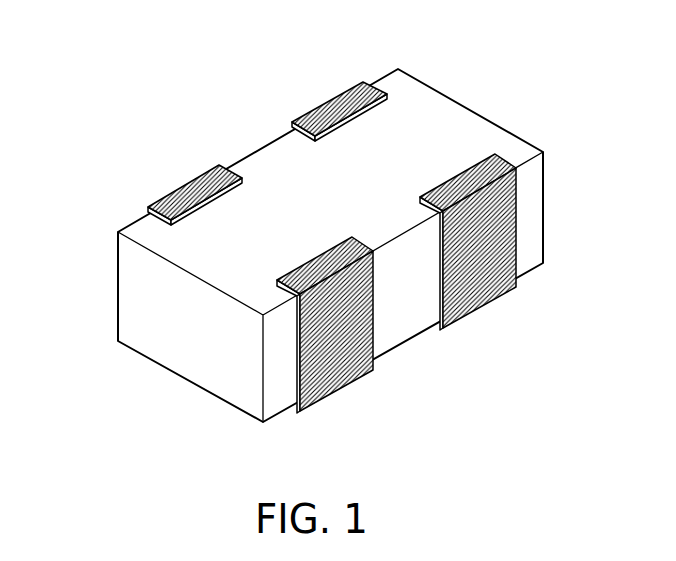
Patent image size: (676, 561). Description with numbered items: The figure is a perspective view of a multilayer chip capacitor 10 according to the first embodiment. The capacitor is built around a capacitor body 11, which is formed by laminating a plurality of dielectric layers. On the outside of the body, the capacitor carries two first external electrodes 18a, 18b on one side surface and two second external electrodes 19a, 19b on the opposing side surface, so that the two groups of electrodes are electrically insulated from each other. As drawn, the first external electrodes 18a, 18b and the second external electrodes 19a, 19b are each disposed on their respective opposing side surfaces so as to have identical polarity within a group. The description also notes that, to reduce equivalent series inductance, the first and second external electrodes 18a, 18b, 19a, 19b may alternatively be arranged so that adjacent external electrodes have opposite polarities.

The multilayer chip capacitor 10 is at (316, 243).
The capacitor body 11 is at (158, 335).
The first external electrode 18a is at (169, 194).
The first external electrode 18b is at (338, 95).
The second external electrode 19a is at (332, 392).
The second external electrode 19b is at (495, 298).